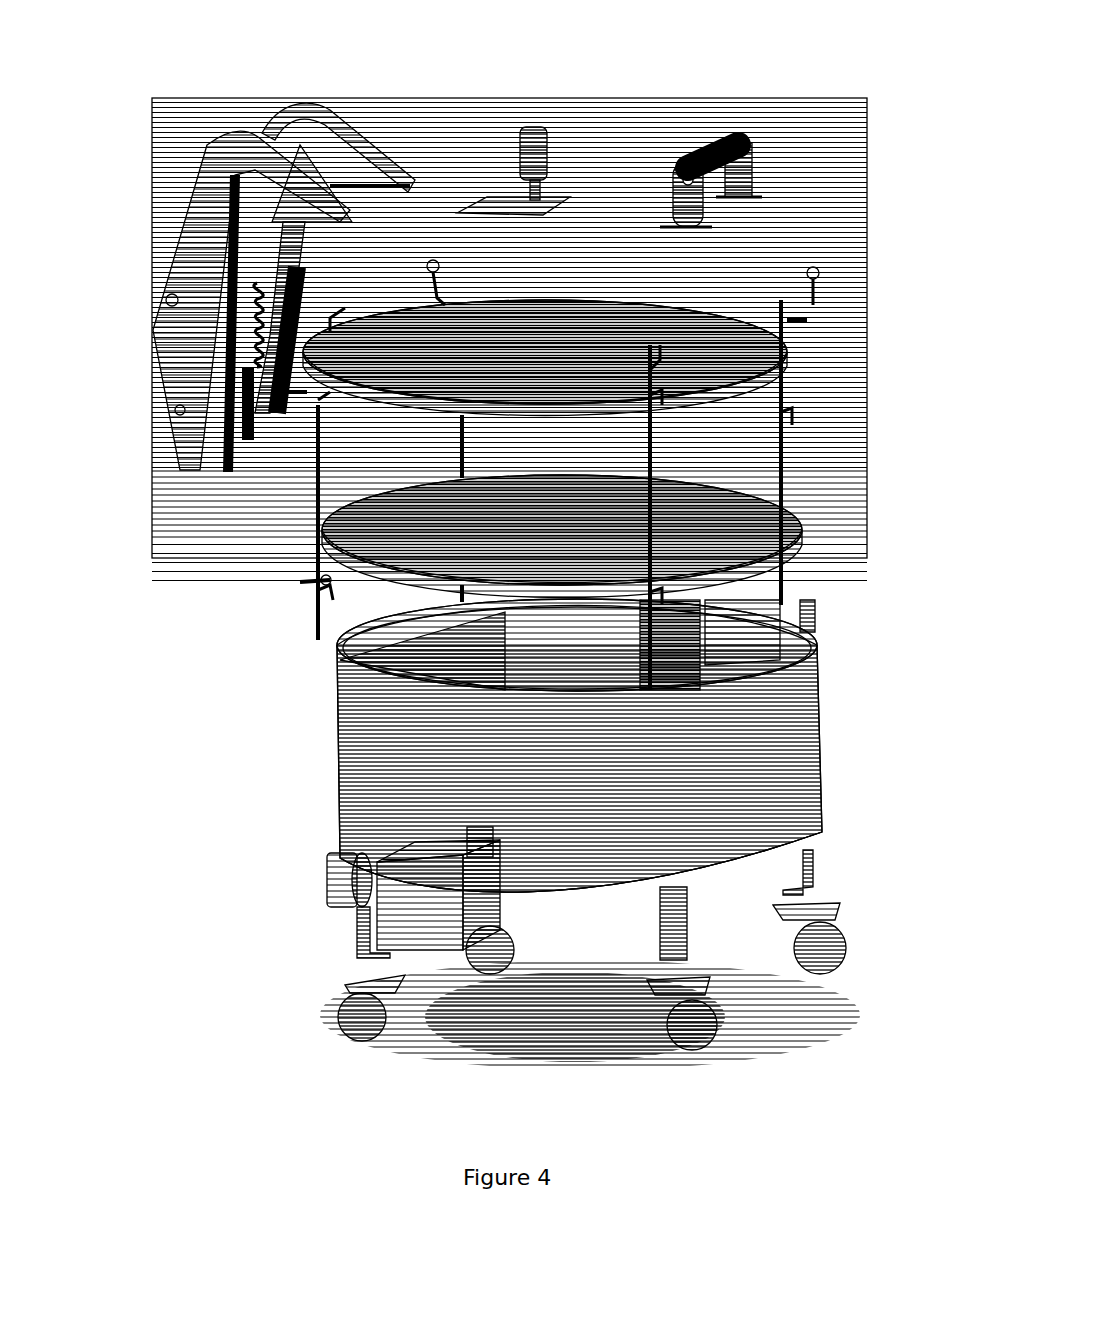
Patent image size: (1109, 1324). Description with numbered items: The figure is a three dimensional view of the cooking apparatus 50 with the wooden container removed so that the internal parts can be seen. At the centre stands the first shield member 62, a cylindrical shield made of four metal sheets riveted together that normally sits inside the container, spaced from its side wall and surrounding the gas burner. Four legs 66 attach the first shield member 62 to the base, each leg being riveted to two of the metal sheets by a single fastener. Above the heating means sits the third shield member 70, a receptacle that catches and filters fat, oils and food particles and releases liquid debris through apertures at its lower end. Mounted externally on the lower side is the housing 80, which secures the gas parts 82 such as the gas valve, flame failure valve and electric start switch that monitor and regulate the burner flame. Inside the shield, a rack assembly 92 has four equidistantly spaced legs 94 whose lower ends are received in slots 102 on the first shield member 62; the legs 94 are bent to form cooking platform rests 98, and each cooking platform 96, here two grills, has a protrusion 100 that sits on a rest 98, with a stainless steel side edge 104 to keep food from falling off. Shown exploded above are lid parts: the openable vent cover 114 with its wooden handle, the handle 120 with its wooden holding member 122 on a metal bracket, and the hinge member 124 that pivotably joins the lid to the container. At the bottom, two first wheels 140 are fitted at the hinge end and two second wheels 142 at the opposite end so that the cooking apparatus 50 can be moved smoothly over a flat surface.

The cooking apparatus 50 is at (146, 796).
The first shield member 62 is at (818, 740).
The legs 66 is at (352, 930).
The third shield member 70 is at (700, 620).
The housing 80 is at (413, 947).
The gas parts 82 is at (325, 877).
The rack assembly 92 is at (280, 521).
The legs 94 is at (315, 455).
The cooking platform 96 is at (750, 307).
The cooking platform rests 98 is at (330, 597).
The protrusion 100 is at (328, 580).
The slot 102 is at (810, 624).
The side edge 104 is at (603, 290).
The openable vent cover 114 is at (457, 212).
The handle 120 is at (766, 135).
The wooden holding member 122 is at (716, 170).
The hinge member 124 is at (138, 277).
The first wheels 140 is at (325, 930).
The second wheels 142 is at (836, 950).